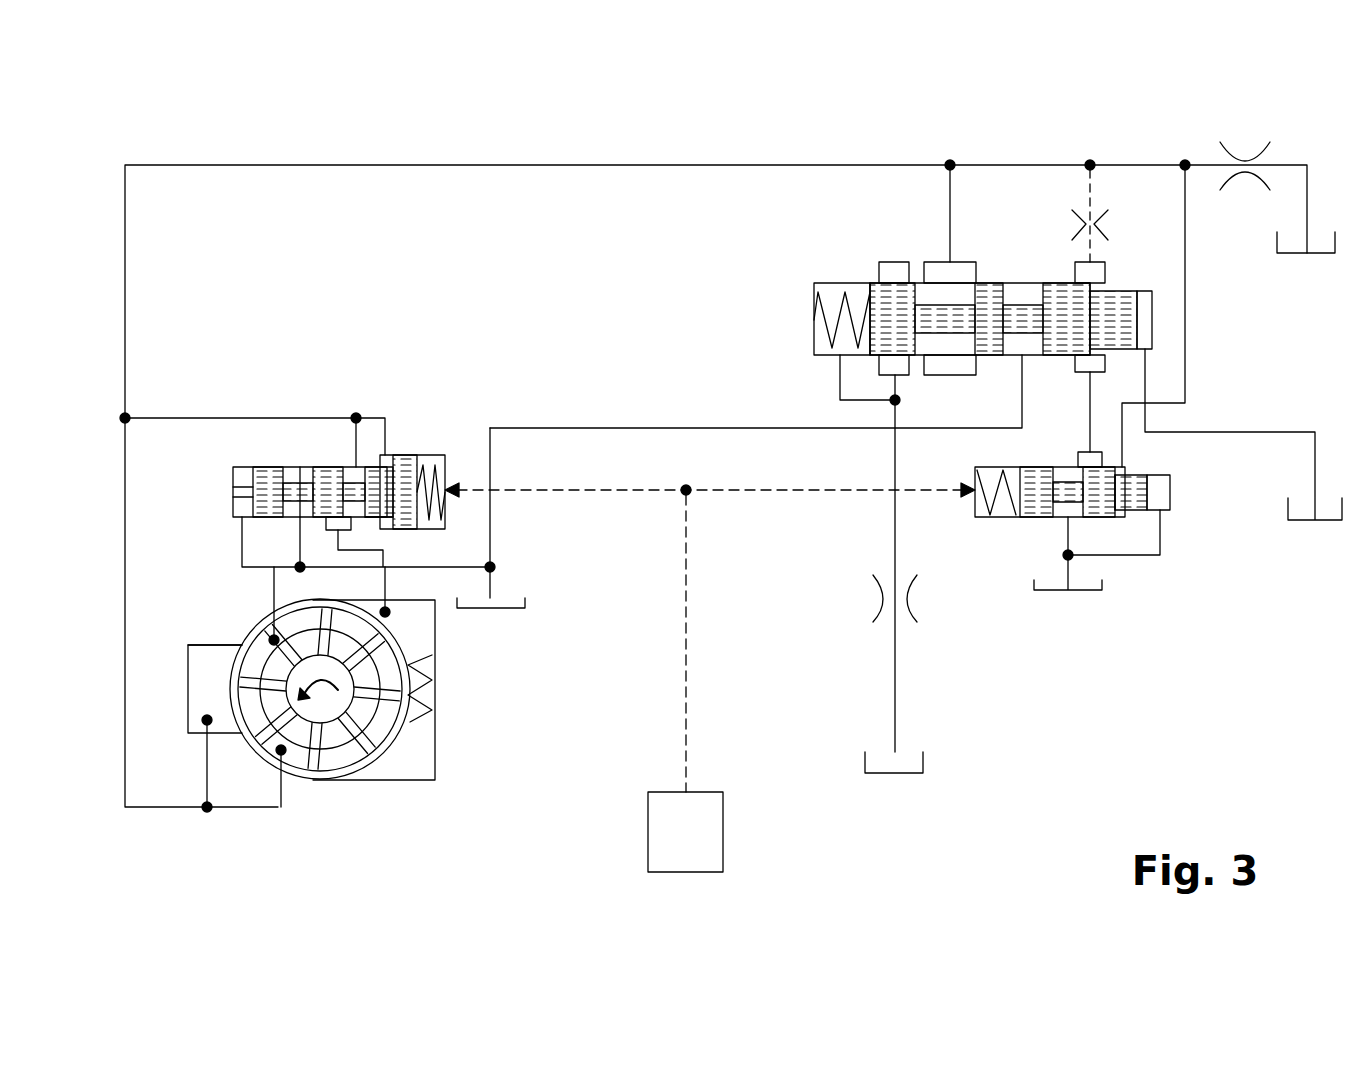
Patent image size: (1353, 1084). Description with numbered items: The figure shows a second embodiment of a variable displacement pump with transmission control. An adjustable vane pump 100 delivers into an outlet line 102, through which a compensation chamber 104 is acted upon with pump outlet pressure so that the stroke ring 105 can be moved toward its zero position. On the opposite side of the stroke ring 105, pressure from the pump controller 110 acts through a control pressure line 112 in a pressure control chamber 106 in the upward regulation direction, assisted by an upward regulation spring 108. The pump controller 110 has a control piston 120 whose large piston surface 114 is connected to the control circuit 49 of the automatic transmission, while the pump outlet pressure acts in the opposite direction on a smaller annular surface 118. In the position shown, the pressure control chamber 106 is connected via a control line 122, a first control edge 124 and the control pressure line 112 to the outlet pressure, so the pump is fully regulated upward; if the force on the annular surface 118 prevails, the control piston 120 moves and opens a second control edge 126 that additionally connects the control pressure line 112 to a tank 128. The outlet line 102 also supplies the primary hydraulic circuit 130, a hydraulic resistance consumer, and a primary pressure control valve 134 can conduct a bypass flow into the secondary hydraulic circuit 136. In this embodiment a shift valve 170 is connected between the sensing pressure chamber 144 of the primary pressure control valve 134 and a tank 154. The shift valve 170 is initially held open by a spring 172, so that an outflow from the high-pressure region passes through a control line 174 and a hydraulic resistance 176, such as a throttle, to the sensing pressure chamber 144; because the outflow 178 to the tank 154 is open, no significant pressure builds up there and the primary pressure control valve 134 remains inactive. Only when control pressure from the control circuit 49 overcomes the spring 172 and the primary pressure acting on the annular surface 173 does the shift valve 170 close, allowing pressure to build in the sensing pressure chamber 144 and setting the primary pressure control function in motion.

The control circuit 49 is at (698, 835).
The adjustable vane pump 100 is at (345, 802).
The outlet line 102 is at (1003, 165).
The compensation chamber 104 is at (212, 700).
The stroke ring 105 is at (200, 656).
The pressure control chamber 106 is at (418, 764).
The upward regulation spring 108 is at (430, 714).
The pump controller 110 is at (372, 396).
The control pressure line 112 is at (385, 586).
The large piston surface 114 is at (428, 466).
The annular surface 118 is at (394, 530).
The control piston 120 is at (407, 454).
The control line 122 is at (233, 418).
The first control edge 124 is at (353, 465).
The second control edge 126 is at (300, 465).
The tank 128 is at (502, 610).
The primary hydraulic circuit 130 is at (1245, 158).
The primary pressure control valve 134 is at (1163, 318).
The secondary hydraulic circuit 136 is at (917, 595).
The sensing pressure chamber 144 is at (1105, 358).
The tank 154 is at (1087, 592).
The shift valve 170 is at (1172, 517).
The spring 172 is at (990, 517).
The annular surface 173 is at (1120, 506).
The control line 174 is at (1088, 193).
The hydraulic resistance 176 is at (1084, 233).
The outflow 178 is at (1094, 409).